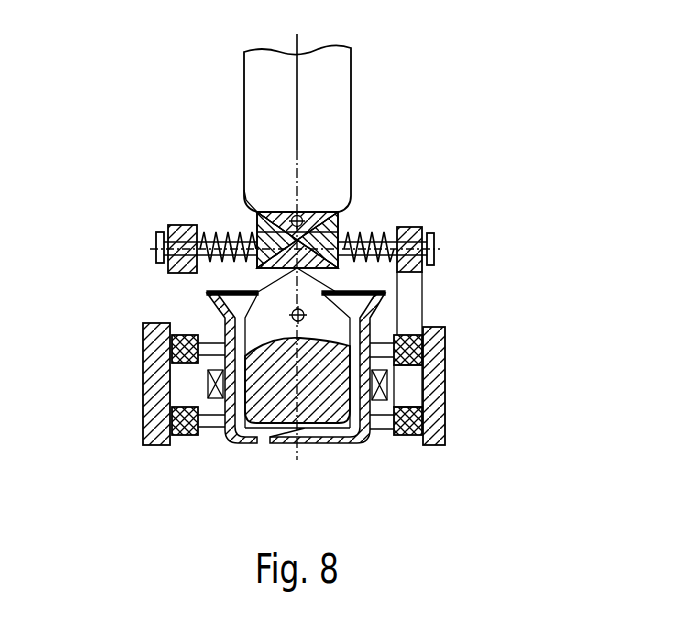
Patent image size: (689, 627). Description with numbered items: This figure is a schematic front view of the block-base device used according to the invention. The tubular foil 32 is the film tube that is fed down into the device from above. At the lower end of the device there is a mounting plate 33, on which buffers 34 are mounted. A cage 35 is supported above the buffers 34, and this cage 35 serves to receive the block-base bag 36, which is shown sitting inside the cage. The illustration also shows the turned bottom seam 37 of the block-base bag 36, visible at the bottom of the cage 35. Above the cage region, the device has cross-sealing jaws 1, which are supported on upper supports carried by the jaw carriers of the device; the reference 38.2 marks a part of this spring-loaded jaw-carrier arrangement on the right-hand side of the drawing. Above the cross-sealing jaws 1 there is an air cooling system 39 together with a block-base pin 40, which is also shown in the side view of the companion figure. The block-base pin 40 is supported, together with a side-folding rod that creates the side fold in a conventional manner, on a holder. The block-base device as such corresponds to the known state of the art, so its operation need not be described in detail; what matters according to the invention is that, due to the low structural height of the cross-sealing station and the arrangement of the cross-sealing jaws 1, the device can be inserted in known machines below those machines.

The tubular foil 32 is at (337, 90).
The air cooling system 39 is at (336, 238).
The cross-sealing jaws 1 is at (345, 238).
The spring-loaded support 38.2 is at (400, 233).
The block-base pin 40 is at (282, 216).
The mounting plate 33 is at (148, 398).
The buffers 34 is at (183, 438).
The cage 35 is at (345, 446).
The block-base bag 36 is at (245, 441).
The turned bottom seam 37 is at (272, 446).